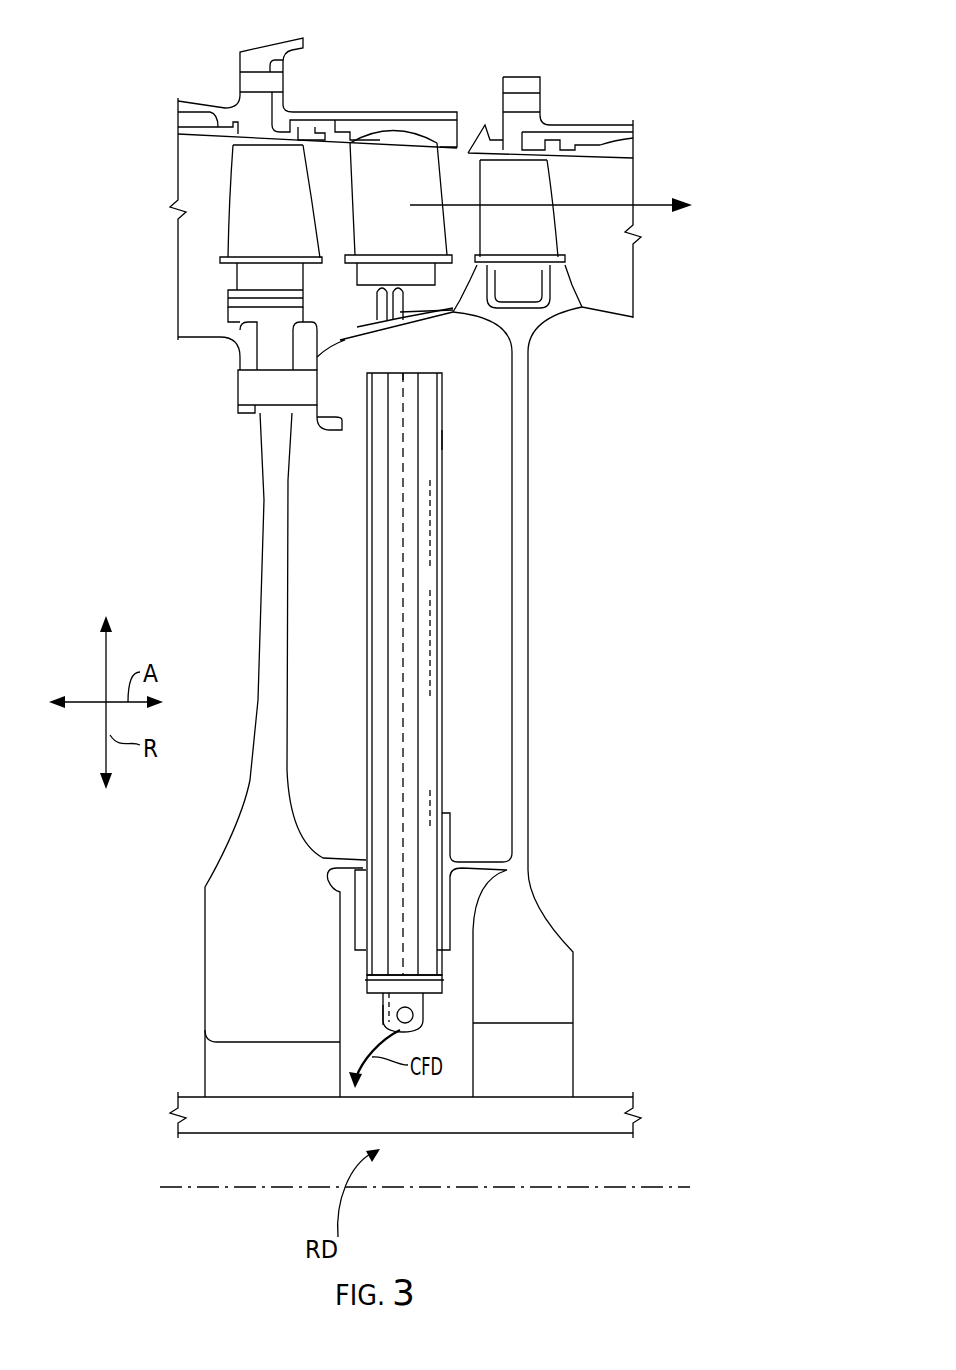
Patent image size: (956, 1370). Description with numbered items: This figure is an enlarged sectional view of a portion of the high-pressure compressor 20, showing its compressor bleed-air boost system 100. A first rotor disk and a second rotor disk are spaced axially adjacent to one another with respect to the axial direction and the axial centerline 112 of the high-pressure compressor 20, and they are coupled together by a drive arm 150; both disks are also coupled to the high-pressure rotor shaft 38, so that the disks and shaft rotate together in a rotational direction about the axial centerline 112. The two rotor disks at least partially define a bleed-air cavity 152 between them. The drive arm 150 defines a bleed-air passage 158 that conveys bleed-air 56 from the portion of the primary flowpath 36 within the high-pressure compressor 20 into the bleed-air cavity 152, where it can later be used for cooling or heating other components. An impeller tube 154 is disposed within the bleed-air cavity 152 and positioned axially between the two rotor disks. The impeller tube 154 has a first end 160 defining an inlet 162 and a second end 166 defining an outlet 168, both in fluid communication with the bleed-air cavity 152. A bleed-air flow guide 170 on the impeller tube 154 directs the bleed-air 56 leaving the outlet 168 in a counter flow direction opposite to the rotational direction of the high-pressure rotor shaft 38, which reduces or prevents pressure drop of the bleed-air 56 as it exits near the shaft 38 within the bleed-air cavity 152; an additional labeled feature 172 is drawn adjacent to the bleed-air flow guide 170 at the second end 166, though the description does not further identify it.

The high-pressure compressor 20 is at (543, 26).
The primary flowpath 36 is at (613, 205).
The high-pressure rotor shaft 38 is at (615, 1097).
The bleed-air 56 is at (398, 372).
The compressor bleed-air boost system 100 is at (606, 383).
The axial centerline 112 is at (497, 1187).
The drive arm 150 is at (533, 352).
The bleed-air cavity 152 is at (347, 614).
The impeller tube 154 is at (442, 440).
The bleed-air passage 158 is at (347, 365).
The first end 160 is at (442, 376).
The inlet 162 is at (413, 373).
The second end 166 is at (425, 1012).
The outlet 168 is at (414, 1006).
The bleed-air flow guide 170 is at (374, 1018).
The tab wall 172 is at (383, 1000).